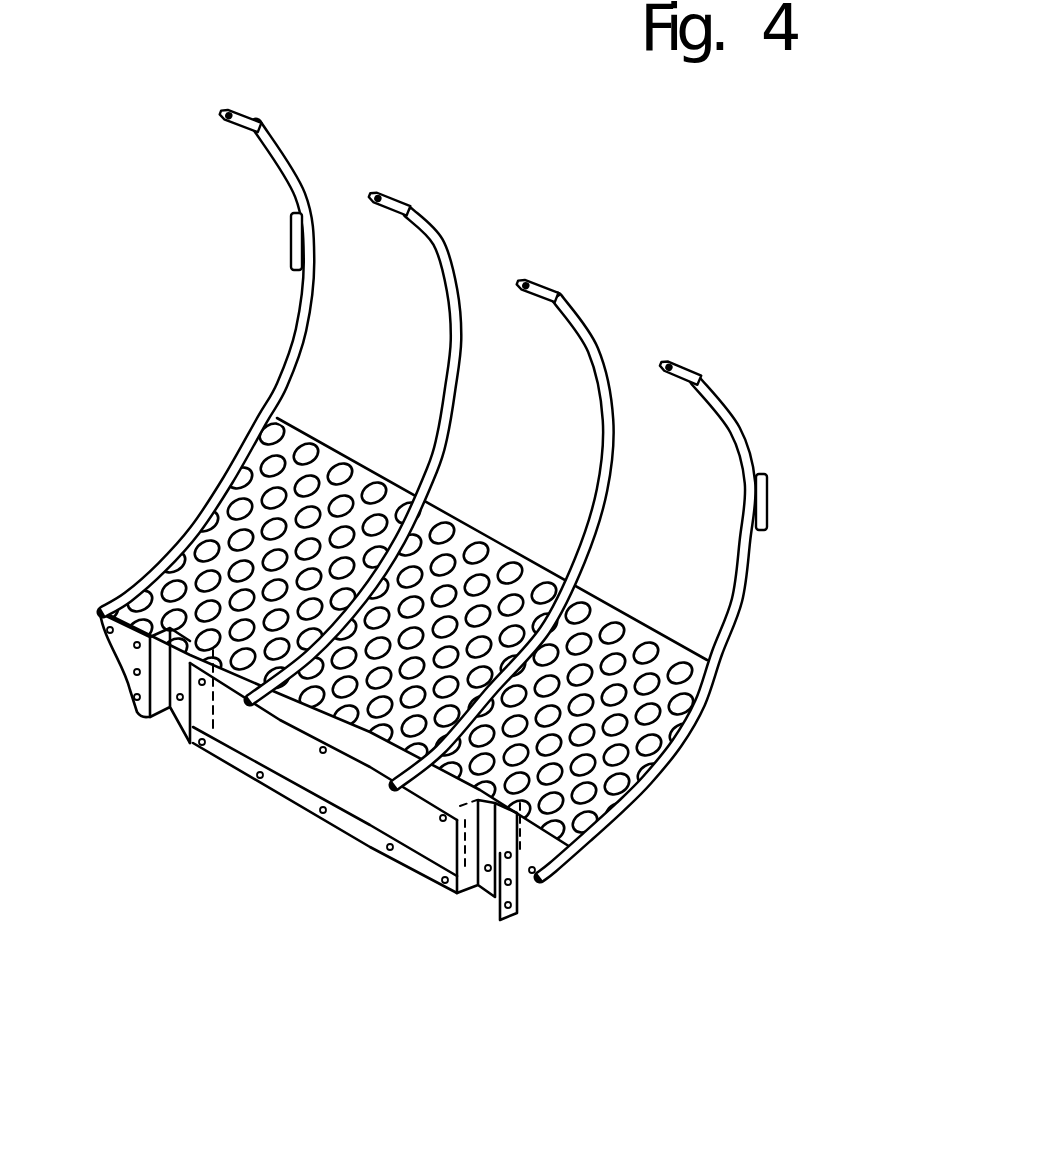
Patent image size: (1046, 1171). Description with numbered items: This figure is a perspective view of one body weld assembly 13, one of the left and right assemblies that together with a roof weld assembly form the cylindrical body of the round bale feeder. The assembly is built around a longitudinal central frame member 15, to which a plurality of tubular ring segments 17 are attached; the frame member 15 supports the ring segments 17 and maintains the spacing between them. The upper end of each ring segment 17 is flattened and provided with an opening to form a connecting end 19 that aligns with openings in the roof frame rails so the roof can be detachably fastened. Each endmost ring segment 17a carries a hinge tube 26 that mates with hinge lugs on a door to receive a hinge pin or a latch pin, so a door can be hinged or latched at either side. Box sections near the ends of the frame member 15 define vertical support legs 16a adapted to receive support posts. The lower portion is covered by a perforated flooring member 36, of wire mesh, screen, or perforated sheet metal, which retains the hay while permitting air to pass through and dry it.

The body weld assembly 13 is at (712, 244).
The longitudinal central frame member 15 is at (313, 790).
The vertical support leg 16a is at (174, 728).
The ring segment 17 is at (435, 477).
The endmost ring segment 17a is at (290, 322).
The connecting end 19 is at (237, 118).
The hinge tube 26 is at (293, 240).
The perforated flooring member 36 is at (597, 783).